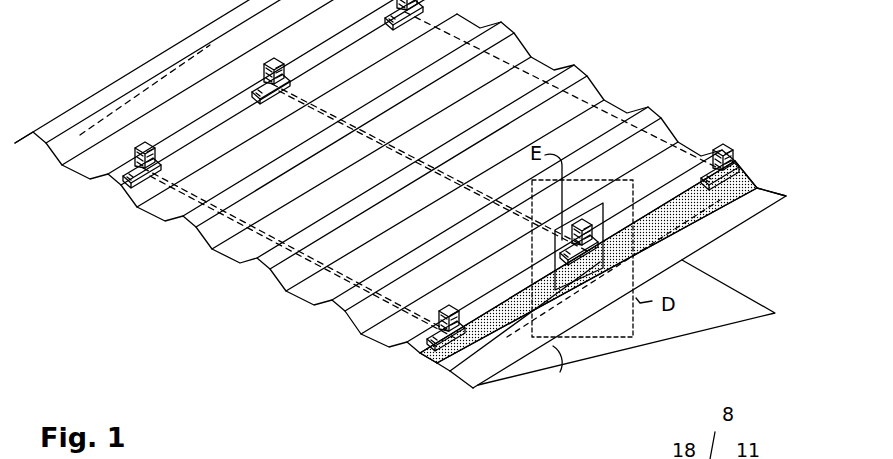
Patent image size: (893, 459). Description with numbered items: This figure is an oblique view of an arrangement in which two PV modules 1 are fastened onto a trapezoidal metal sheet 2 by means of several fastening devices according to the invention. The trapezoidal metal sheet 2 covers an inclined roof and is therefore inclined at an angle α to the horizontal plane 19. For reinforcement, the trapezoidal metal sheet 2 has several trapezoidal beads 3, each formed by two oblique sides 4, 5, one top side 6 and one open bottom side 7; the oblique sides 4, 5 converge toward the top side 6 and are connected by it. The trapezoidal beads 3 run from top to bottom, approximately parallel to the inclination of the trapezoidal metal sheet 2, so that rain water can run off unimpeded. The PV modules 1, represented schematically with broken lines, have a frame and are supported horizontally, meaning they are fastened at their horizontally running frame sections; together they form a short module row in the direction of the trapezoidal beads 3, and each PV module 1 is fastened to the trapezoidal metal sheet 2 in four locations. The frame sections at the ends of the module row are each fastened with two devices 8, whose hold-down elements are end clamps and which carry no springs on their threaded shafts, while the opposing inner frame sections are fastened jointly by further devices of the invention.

The PV module 1 is at (167, 80).
The trapezoidal metal sheet 2 is at (543, 65).
The trapezoidal bead 3 is at (407, 362).
The oblique side 4 is at (455, 372).
The oblique side 5 is at (383, 356).
The top side 6 is at (495, 300).
The open bottom side 7 is at (425, 362).
The device 8 is at (147, 148).
The horizontal plane 19 is at (730, 310).